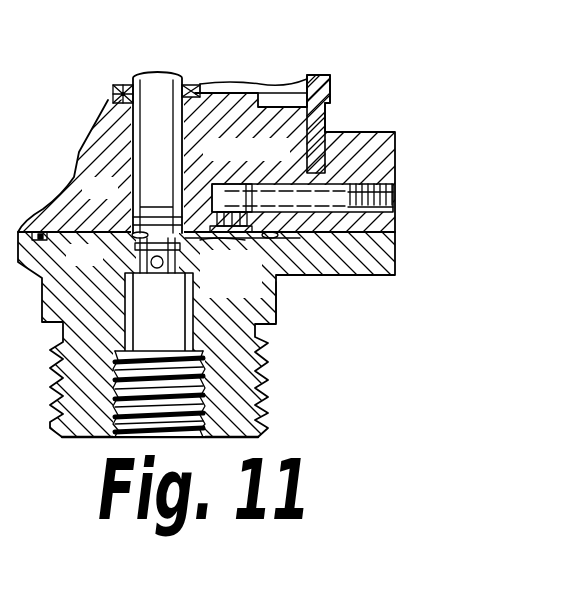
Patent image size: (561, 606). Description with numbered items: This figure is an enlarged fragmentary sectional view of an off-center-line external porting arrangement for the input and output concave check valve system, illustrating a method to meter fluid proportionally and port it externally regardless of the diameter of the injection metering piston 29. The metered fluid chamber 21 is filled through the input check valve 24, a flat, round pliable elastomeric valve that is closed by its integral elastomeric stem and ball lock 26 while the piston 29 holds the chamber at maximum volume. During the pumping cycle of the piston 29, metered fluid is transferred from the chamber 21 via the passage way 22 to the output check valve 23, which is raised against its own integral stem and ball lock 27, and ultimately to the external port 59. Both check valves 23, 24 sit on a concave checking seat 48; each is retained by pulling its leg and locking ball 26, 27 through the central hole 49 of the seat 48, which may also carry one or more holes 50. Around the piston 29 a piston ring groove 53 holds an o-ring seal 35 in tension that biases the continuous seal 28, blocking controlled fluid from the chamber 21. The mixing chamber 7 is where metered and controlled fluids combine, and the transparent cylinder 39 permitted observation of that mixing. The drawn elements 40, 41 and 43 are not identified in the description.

The mixing chamber 7 is at (290, 95).
The metered fluid chamber 21 is at (161, 212).
The passage way 22 is at (279, 306).
The output check valve 23 is at (232, 200).
The input check valve 24 is at (136, 218).
The integral elastomeric stem and ball lock 26 is at (160, 272).
The integral elastomeric stem and ball lock 27 is at (213, 236).
The continuous seal 28 is at (205, 90).
The injection metering piston 29 is at (167, 72).
The o-ring seal 35 is at (120, 92).
The transparent cylinder 39 is at (331, 88).
The valve housing 40 is at (98, 153).
The threaded body 41 is at (245, 398).
The seal 43 is at (42, 232).
The concave checking seat 48 is at (246, 214).
The central hole 49 is at (134, 238).
The holes 50 is at (178, 262).
The piston ring groove 53 is at (113, 100).
The external port 59 is at (346, 190).